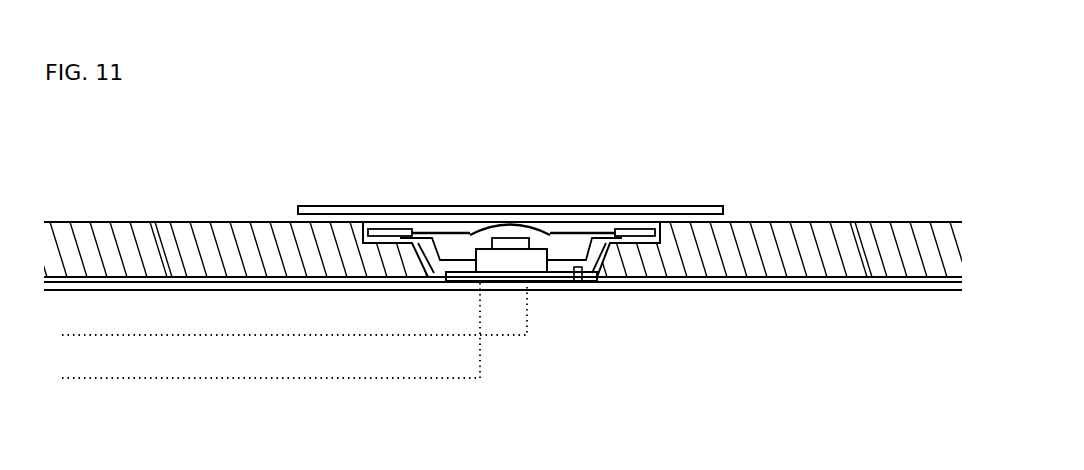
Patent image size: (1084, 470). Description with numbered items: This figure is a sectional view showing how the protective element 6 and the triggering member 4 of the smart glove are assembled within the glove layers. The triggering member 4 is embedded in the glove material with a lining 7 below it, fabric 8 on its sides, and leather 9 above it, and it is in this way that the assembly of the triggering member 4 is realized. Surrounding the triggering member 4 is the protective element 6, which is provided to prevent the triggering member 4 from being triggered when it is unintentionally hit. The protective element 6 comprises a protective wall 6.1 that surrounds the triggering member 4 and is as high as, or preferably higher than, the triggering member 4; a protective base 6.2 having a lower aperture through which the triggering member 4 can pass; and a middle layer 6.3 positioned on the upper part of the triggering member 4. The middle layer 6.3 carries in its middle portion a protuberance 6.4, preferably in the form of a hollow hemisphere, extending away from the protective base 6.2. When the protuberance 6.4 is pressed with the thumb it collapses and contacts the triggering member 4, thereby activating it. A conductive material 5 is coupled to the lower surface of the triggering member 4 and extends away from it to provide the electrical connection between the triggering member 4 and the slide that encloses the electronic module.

The triggering member 4 is at (515, 271).
The conductive material 5 is at (237, 336).
The protective element 6 is at (452, 213).
The protective wall 6.1 is at (600, 284).
The protective base 6.2 is at (580, 283).
The middle layer 6.3 is at (571, 230).
The protuberance 6.4 is at (513, 225).
The lining 7 is at (712, 293).
The fabric 8 is at (795, 223).
The leather 9 is at (683, 207).